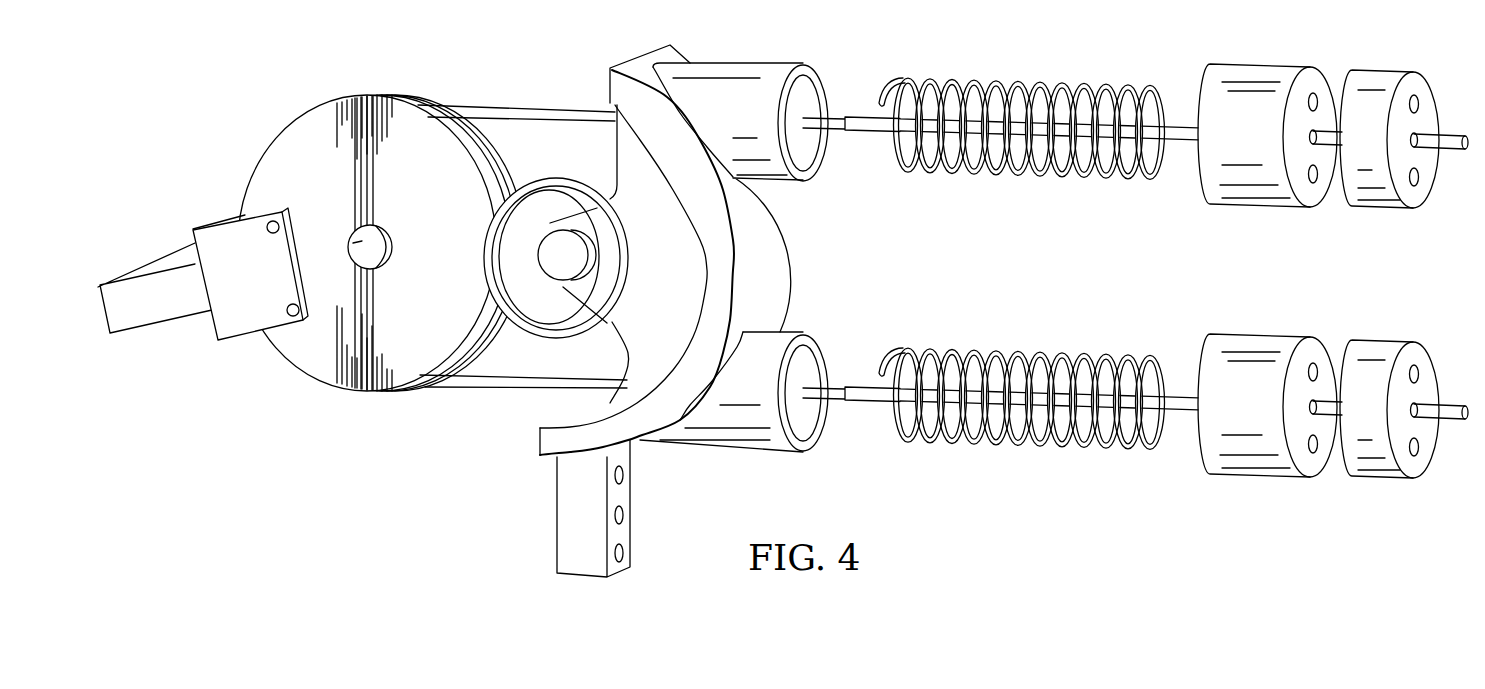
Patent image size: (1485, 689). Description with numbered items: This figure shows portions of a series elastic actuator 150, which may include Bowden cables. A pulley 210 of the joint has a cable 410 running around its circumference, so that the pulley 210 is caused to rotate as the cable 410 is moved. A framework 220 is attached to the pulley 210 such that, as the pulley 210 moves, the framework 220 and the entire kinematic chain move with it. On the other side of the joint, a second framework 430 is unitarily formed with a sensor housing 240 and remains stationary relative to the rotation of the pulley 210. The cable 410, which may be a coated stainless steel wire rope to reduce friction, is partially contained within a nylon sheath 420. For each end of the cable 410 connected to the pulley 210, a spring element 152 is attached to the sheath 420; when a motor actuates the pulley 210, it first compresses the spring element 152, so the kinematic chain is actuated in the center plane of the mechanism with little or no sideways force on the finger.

The series elastic actuator 150 is at (1283, 333).
The spring element 152 is at (1030, 445).
The pulley 210 is at (317, 352).
The framework 220 is at (165, 303).
The sensor housing 240 is at (490, 256).
The cable 410 is at (495, 390).
The sheath 420 is at (868, 403).
The framework 430 is at (572, 515).